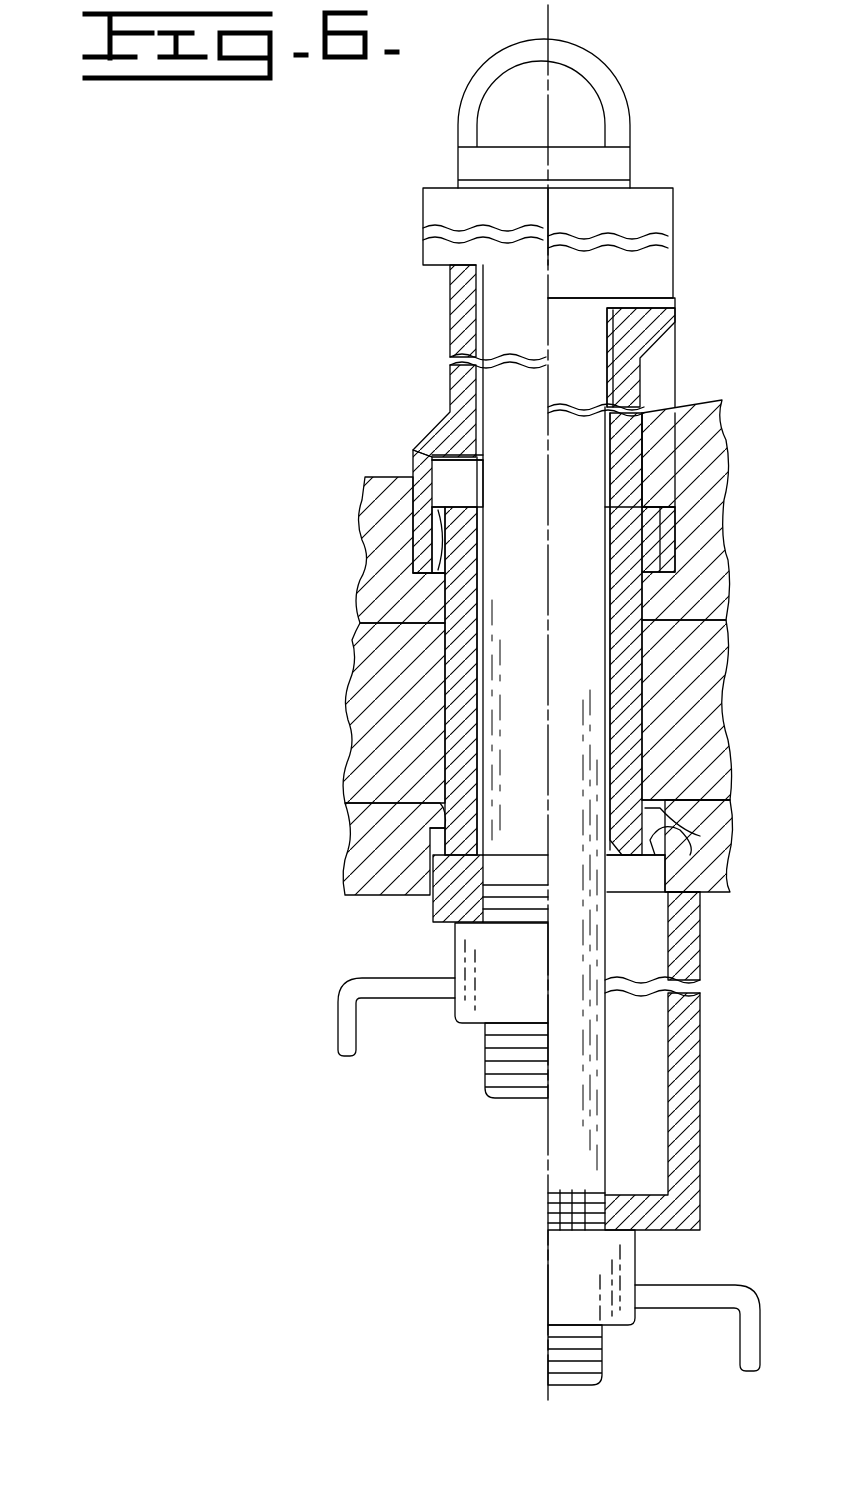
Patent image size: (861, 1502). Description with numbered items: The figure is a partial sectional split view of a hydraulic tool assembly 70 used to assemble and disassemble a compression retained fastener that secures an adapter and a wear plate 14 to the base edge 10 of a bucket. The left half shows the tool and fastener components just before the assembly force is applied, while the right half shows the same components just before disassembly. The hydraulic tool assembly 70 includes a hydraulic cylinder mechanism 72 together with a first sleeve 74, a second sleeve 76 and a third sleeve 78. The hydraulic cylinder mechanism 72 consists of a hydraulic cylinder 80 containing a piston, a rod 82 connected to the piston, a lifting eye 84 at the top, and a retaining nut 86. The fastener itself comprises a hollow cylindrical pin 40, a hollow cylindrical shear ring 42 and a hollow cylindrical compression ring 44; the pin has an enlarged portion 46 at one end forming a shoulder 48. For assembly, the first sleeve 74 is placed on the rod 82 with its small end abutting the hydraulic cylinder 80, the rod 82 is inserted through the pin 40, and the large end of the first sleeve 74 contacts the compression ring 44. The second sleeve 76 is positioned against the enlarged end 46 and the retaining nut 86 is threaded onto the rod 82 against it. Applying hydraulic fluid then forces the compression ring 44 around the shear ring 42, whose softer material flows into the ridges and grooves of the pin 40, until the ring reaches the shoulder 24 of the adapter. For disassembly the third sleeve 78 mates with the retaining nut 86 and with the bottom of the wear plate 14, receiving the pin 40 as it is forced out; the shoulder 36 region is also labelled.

The hydraulic tool assembly 70 is at (240, 190).
The lifting eye 84 is at (607, 80).
The hydraulic cylinder mechanism 72 is at (385, 224).
The hydraulic cylinder 80 is at (665, 270).
The rod 82 is at (592, 382).
The first sleeve 74 is at (457, 392).
The hollow cylindrical compression ring 44 is at (420, 485).
The hollow cylindrical shear ring 42 is at (432, 545).
The hollow cylindrical pin 40 is at (457, 658).
The shoulder 24 is at (366, 600).
The base edge 10 is at (382, 718).
The wear plate 14 is at (352, 866).
The enlarged portion 46 is at (438, 832).
The shoulder 48 is at (668, 832).
The shoulder 36 is at (700, 856).
The second sleeve 76 is at (445, 910).
The retaining nut 86 is at (475, 1032).
The third sleeve 78 is at (700, 1022).